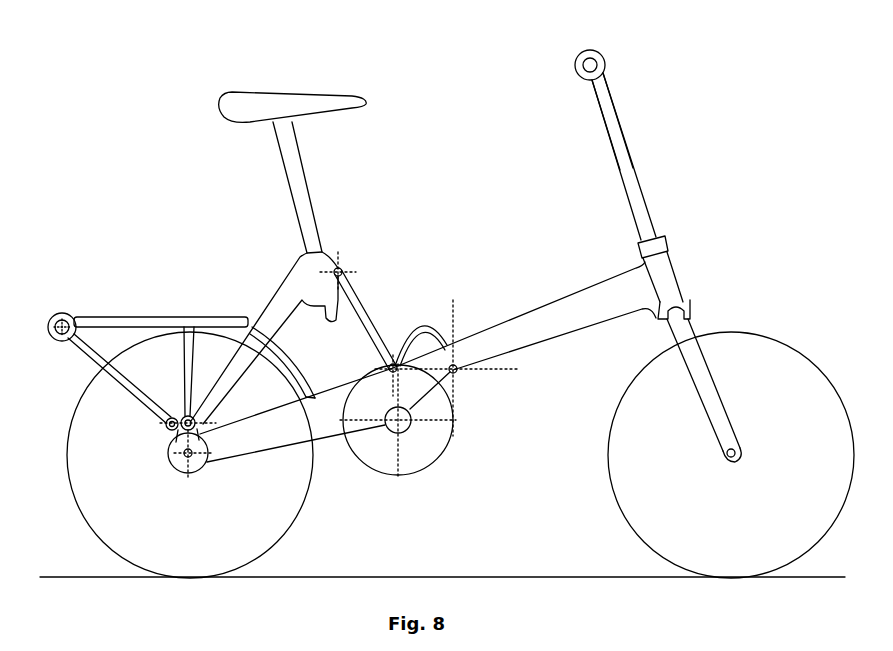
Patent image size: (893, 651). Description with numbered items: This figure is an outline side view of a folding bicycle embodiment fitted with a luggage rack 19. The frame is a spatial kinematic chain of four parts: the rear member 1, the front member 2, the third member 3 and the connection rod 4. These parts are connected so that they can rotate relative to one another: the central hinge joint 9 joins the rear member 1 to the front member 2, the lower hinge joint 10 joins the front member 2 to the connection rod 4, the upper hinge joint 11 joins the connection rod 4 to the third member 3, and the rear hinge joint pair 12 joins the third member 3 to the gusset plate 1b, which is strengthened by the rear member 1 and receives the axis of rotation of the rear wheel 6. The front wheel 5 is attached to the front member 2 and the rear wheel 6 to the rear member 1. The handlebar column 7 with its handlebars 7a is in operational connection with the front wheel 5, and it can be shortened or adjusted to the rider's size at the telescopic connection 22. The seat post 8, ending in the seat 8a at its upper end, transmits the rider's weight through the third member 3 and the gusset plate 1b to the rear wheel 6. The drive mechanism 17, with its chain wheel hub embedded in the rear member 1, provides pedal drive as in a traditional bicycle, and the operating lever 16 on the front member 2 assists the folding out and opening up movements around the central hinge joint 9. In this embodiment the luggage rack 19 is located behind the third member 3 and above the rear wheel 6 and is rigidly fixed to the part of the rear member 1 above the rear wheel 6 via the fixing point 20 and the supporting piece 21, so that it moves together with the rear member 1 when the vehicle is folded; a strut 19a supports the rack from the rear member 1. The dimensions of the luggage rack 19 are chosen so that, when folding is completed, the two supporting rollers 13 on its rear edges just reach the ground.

The rear member 1 is at (320, 423).
The gusset plate 1b is at (180, 458).
The front member 2 is at (528, 333).
The third member 3 is at (240, 366).
The connection rod 4 is at (369, 318).
The front wheel 5 is at (776, 548).
The rear wheel 6 is at (270, 509).
The handlebar column 7 is at (642, 193).
The handlebars 7a is at (596, 70).
The seat post 8 is at (298, 221).
The seat 8a is at (233, 102).
The central hinge joint 9 is at (457, 373).
The lower hinge joint 10 is at (393, 368).
The upper hinge joint 11 is at (338, 272).
The rear hinge joint pair 12 is at (187, 421).
The supporting rollers 13 is at (62, 319).
The operating lever 16 is at (429, 329).
The drive mechanism 17 is at (423, 448).
The luggage rack 19 is at (138, 320).
The rack support strut 19a is at (97, 322).
The fixing point 20 is at (172, 427).
The supporting piece 21 is at (352, 363).
The telescopic connection 22 is at (620, 149).